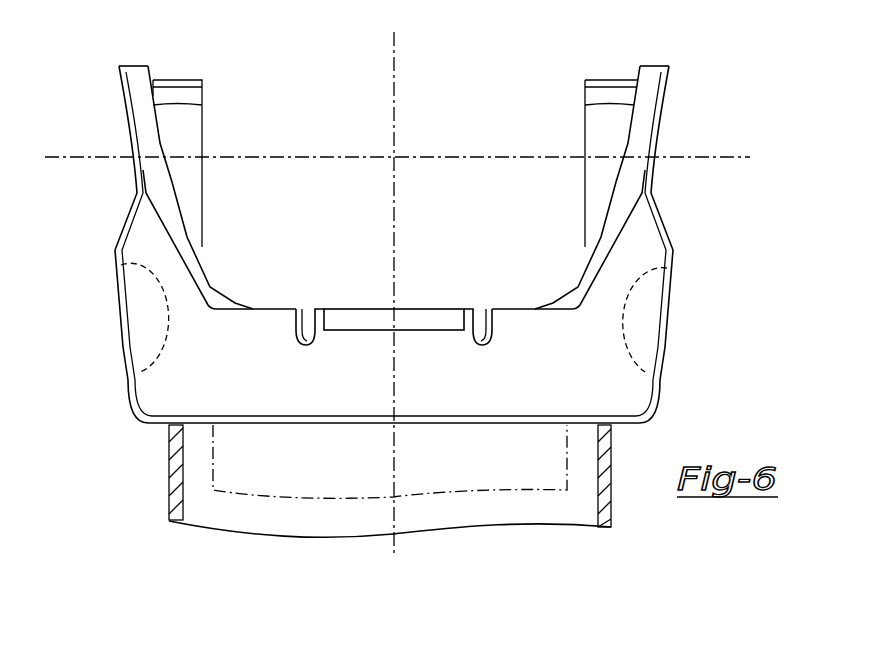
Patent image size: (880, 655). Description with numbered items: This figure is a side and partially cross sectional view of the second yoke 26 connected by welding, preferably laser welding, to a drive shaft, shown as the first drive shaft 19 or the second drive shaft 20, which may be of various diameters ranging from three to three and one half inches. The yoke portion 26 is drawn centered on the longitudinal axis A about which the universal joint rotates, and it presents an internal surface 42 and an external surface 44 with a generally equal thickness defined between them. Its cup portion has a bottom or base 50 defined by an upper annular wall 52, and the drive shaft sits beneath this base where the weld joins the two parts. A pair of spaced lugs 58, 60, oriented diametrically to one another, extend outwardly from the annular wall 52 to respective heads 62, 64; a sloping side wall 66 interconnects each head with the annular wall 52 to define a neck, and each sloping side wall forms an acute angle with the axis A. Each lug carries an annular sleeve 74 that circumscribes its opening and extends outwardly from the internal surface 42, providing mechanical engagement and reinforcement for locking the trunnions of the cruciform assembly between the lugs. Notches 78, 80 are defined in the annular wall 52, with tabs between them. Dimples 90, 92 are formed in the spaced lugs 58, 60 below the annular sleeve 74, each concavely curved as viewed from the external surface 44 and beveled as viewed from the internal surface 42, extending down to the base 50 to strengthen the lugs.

The first drive shaft 19 is at (422, 495).
The second drive shaft 20 is at (168, 468).
The second yoke 26 is at (496, 128).
The internal surface 42 is at (223, 278).
The external surface 44 is at (571, 372).
The bottom or base 50 is at (430, 426).
The annular wall 52 is at (419, 386).
The spaced lug 58 is at (150, 223).
The spaced lug 60 is at (640, 234).
The head 62 is at (131, 63).
The head 64 is at (660, 65).
The sloping side wall 66 is at (152, 125).
The annular sleeve 74 is at (175, 80).
The notch 78 is at (472, 340).
The notch 80 is at (307, 340).
The dimple 90 is at (153, 313).
The dimple 92 is at (628, 327).
The longitudinal axis A is at (395, 118).